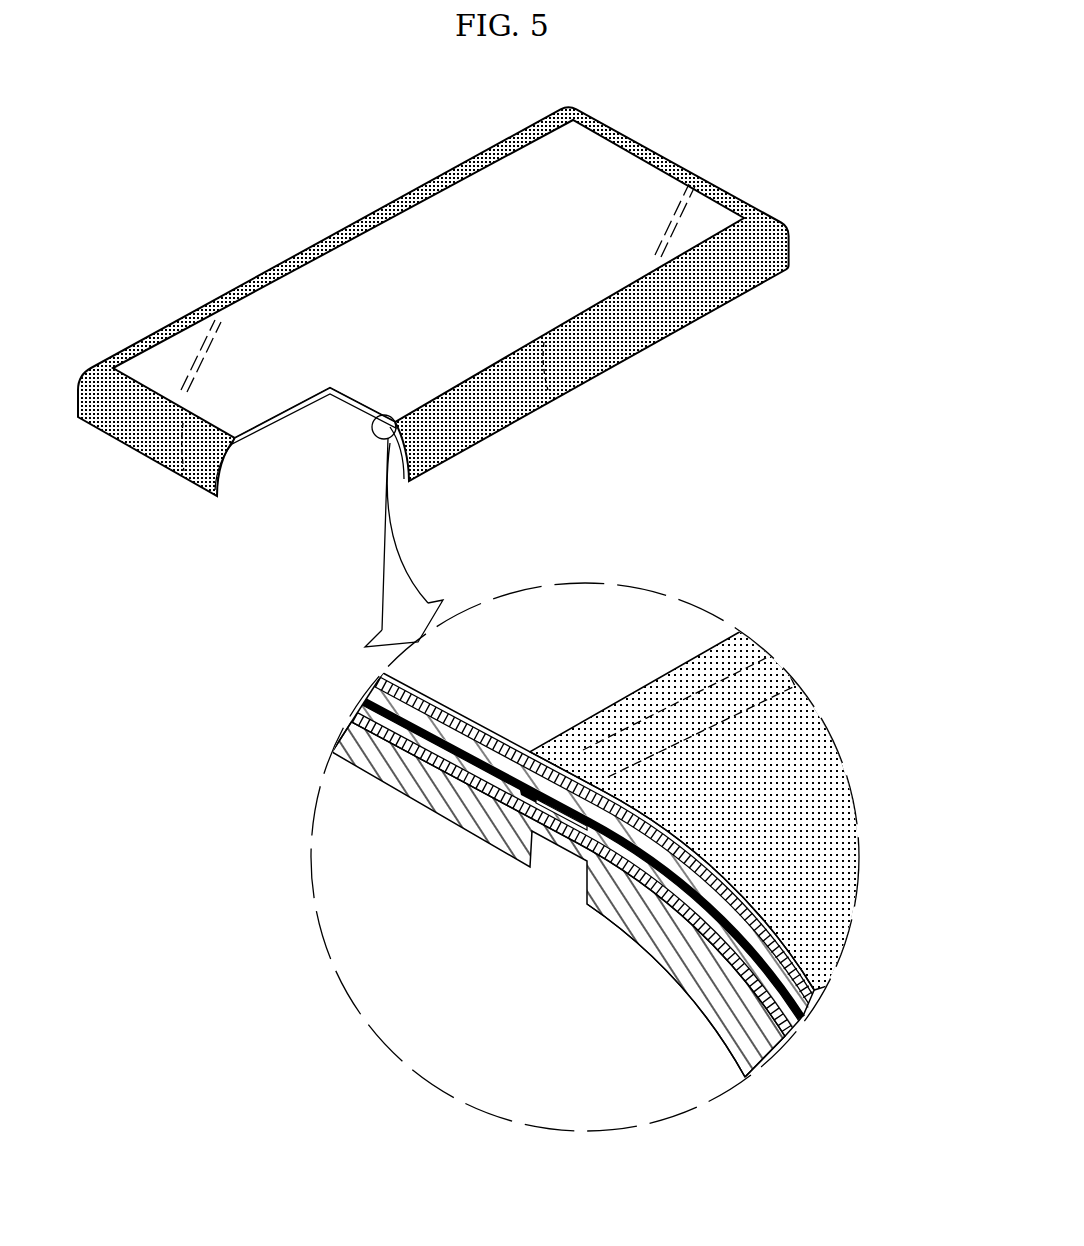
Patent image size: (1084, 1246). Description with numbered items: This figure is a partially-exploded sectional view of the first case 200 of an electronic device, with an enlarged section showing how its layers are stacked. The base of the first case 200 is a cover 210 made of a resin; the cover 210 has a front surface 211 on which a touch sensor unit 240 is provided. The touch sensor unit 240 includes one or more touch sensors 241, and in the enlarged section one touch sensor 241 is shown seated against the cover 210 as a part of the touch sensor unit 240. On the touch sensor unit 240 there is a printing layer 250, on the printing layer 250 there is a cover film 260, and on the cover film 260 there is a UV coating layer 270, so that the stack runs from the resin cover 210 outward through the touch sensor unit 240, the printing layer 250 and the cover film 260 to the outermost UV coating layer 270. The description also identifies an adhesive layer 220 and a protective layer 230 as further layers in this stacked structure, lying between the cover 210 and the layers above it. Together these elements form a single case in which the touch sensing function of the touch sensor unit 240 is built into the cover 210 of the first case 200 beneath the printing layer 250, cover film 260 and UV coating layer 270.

The first case 200 is at (744, 168).
The cover 210 is at (720, 1013).
The front surface 211 is at (768, 1062).
The adhesive layer 220 is at (792, 1034).
The protective layer 230 is at (799, 1027).
The touch sensor unit 240 is at (729, 720).
The touch sensor 241 is at (553, 816).
The printing layer 250 is at (816, 1015).
The cover film 260 is at (823, 998).
The UV coating layer 270 is at (803, 972).